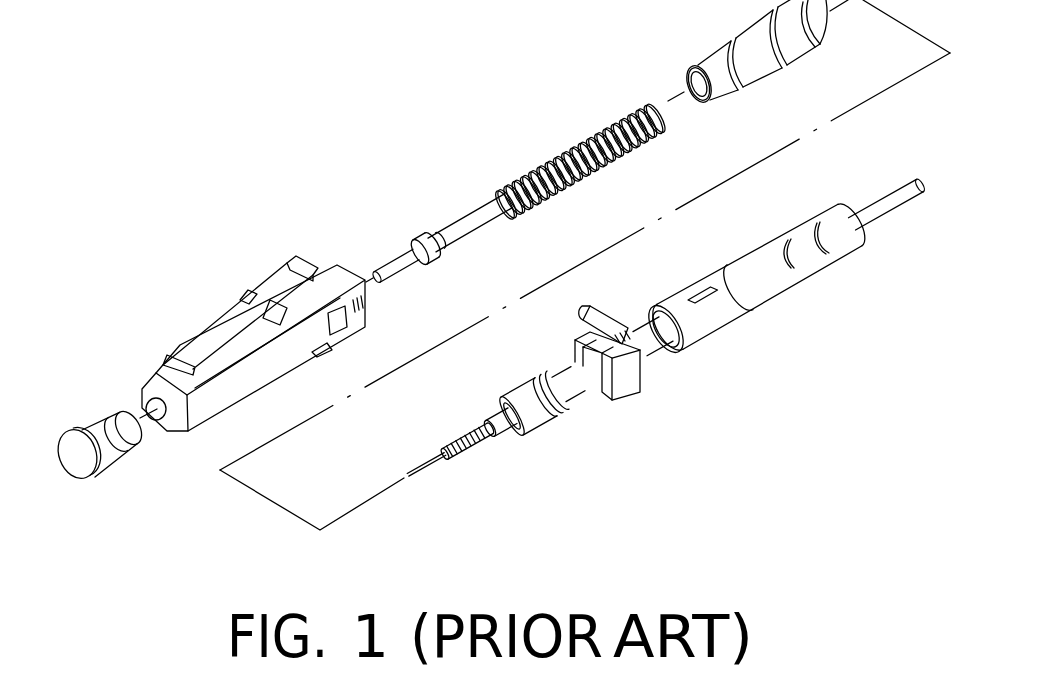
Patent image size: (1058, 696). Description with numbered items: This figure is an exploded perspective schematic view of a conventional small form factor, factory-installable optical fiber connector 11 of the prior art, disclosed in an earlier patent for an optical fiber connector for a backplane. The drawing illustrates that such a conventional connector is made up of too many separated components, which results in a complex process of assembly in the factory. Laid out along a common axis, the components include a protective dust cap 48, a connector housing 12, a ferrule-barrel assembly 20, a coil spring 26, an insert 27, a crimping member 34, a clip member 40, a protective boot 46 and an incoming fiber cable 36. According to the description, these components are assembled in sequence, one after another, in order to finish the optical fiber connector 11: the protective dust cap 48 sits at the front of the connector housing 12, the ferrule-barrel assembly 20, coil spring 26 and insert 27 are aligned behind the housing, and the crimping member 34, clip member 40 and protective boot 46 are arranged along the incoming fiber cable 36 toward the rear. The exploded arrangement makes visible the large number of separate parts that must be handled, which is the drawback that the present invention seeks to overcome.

The optical fiber connector 11 is at (270, 172).
The connector housing 12 is at (222, 393).
The ferrule-barrel assembly 20 is at (465, 209).
The coil spring 26 is at (542, 162).
The insert 27 is at (718, 90).
The crimping member 34 is at (533, 413).
The incoming fiber cable 36 is at (497, 427).
The clip member 40 is at (630, 380).
The protective boot 46 is at (775, 278).
The protective dust cap 48 is at (98, 428).